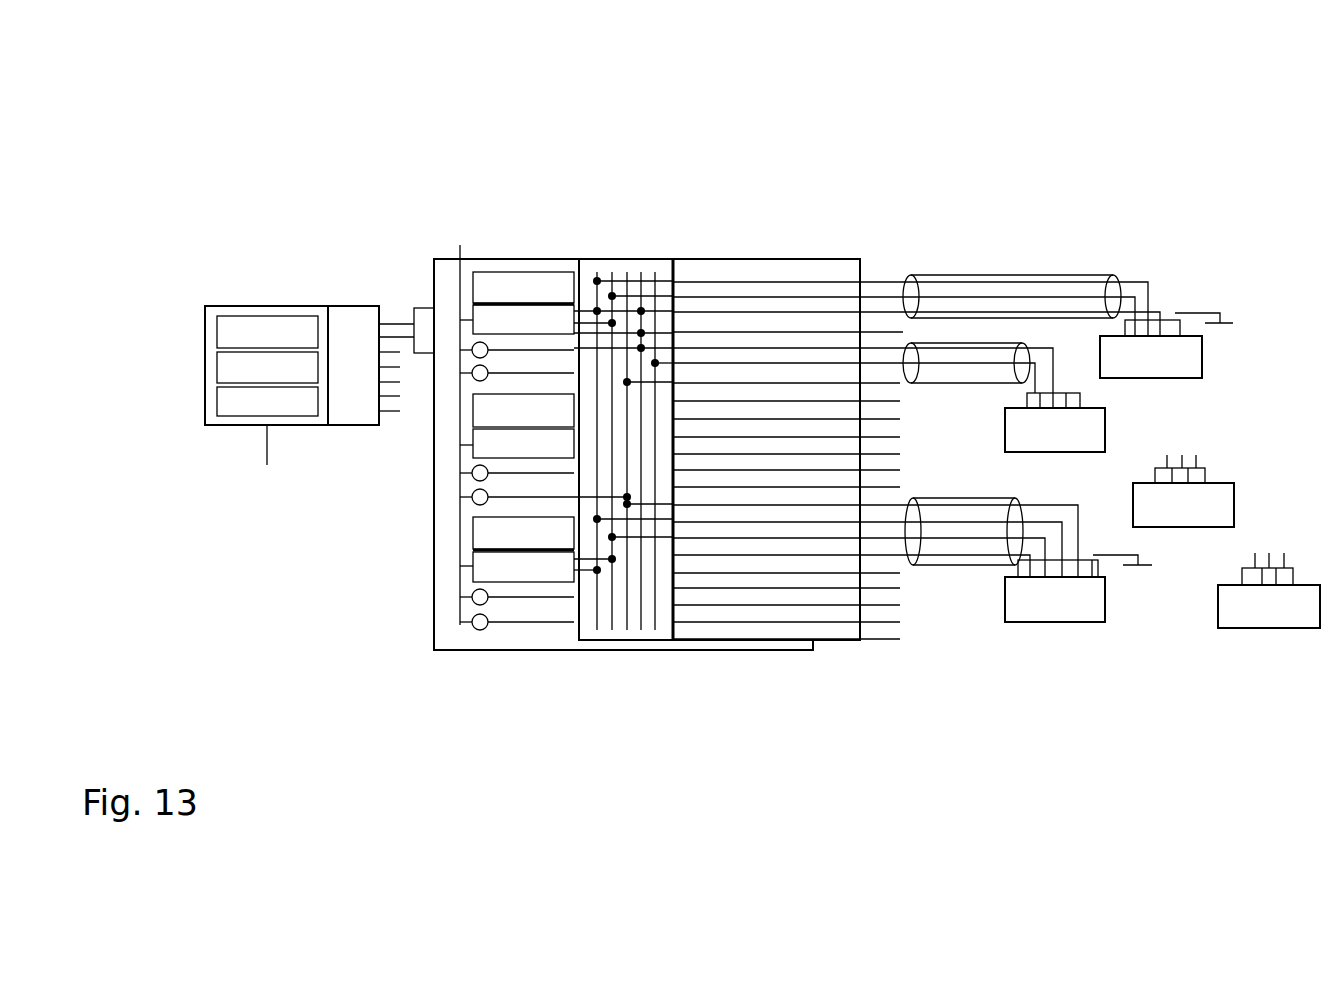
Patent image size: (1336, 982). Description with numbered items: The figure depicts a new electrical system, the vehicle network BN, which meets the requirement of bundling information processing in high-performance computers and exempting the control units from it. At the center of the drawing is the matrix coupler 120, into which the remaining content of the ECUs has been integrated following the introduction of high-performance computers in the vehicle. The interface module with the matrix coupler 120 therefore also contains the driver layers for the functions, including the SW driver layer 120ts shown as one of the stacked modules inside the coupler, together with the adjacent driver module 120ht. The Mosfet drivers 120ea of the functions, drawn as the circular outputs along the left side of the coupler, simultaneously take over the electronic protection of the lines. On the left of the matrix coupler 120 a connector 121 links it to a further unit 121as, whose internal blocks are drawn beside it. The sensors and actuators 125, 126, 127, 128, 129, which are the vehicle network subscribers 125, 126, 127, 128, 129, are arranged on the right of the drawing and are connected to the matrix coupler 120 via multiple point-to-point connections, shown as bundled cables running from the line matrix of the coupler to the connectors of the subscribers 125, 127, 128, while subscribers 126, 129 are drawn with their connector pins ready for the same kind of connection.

The vehicle network BN is at (903, 181).
The matrix coupler 120 is at (567, 650).
The SW driver layer 120ts is at (508, 525).
The heater module 120ht is at (508, 568).
The Mosfet drivers 120ea is at (467, 624).
The connector 121 is at (337, 322).
The actuator/sensor unit 121as is at (260, 340).
The vehicle network subscriber 125 is at (1152, 355).
The vehicle network subscriber 126 is at (1195, 485).
The vehicle network subscriber 127 is at (1032, 422).
The vehicle network subscriber 128 is at (1029, 591).
The vehicle network subscriber 129 is at (1241, 598).